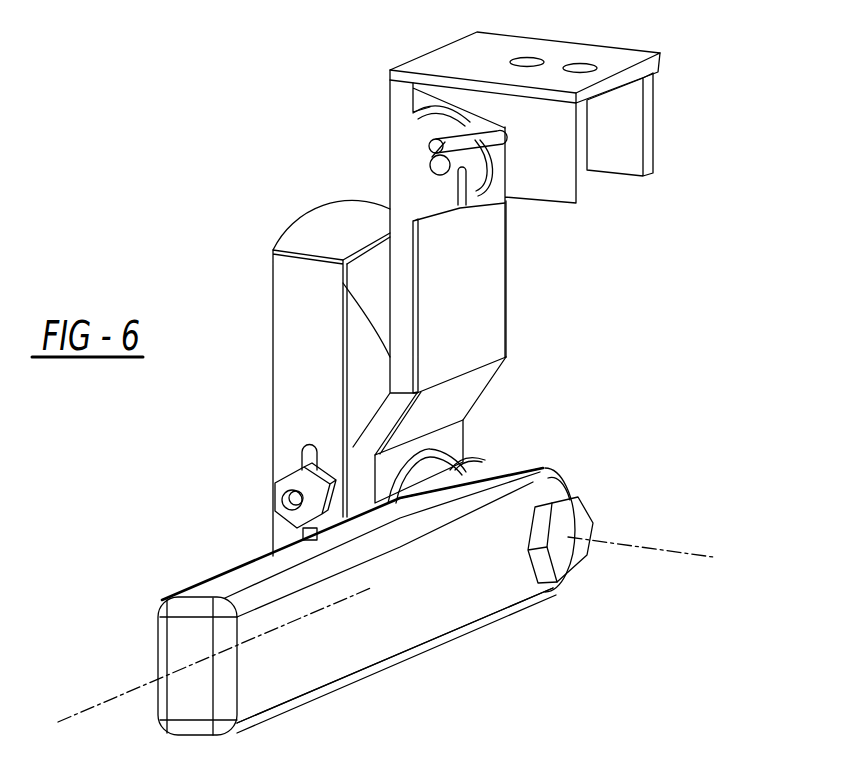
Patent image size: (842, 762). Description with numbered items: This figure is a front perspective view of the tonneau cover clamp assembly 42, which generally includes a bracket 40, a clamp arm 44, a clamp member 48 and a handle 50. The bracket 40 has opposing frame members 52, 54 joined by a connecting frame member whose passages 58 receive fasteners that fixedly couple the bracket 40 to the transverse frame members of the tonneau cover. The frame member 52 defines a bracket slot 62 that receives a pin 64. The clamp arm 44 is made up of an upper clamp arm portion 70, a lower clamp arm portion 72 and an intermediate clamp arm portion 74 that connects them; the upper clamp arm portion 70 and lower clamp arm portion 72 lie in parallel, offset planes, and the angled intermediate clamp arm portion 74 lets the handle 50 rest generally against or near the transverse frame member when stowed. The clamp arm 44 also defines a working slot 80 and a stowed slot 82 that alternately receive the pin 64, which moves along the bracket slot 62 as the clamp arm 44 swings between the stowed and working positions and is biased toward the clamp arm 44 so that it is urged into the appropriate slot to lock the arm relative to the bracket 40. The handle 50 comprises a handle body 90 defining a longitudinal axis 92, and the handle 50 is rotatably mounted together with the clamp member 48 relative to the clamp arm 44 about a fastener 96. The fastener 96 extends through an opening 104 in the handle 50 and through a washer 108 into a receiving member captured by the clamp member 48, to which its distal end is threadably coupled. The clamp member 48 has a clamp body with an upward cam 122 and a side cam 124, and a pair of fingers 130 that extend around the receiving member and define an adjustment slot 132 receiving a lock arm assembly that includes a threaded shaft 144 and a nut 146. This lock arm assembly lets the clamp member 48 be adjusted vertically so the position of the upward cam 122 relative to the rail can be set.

The bracket 40 is at (627, 60).
The assembly 42 is at (438, 757).
The clamp arm 44 is at (470, 267).
The clamp member 48 is at (297, 325).
The handle 50 is at (438, 612).
The frame member 52 is at (557, 173).
The frame member 54 is at (648, 118).
The passages 58 is at (527, 59).
The bracket slot 62 is at (503, 137).
The pin 64 is at (433, 147).
The upper clamp arm portion 70 is at (478, 312).
The lower clamp arm portion 72 is at (452, 443).
The intermediate clamp arm portion 74 is at (467, 392).
The working slot 80 is at (440, 133).
The stowed slot 82 is at (466, 198).
The handle body 90 is at (318, 658).
The longitudinal axis 92 is at (80, 712).
The fastener 96 is at (568, 558).
The opening 104 is at (513, 520).
The washer 108 is at (423, 475).
The upward cam 122 is at (318, 238).
The side cam 124 is at (365, 268).
The fingers 130 is at (285, 533).
The adjustment slot 132 is at (307, 457).
The threaded shaft 144 is at (283, 502).
The nut 146 is at (288, 485).